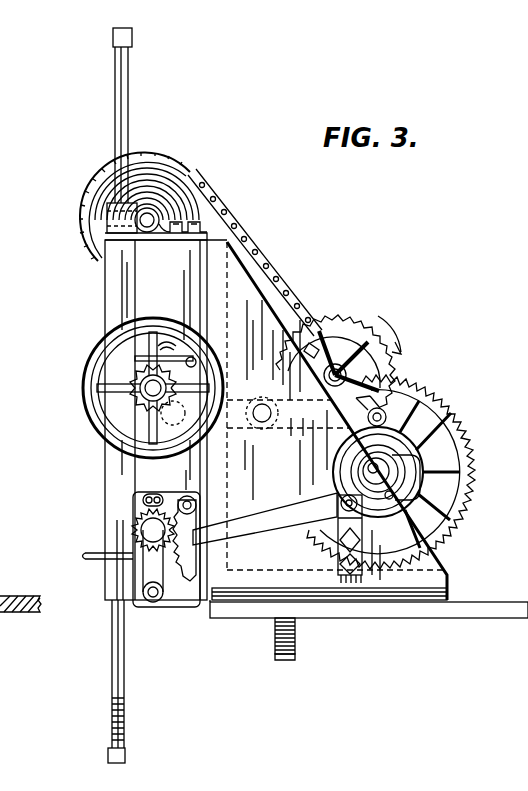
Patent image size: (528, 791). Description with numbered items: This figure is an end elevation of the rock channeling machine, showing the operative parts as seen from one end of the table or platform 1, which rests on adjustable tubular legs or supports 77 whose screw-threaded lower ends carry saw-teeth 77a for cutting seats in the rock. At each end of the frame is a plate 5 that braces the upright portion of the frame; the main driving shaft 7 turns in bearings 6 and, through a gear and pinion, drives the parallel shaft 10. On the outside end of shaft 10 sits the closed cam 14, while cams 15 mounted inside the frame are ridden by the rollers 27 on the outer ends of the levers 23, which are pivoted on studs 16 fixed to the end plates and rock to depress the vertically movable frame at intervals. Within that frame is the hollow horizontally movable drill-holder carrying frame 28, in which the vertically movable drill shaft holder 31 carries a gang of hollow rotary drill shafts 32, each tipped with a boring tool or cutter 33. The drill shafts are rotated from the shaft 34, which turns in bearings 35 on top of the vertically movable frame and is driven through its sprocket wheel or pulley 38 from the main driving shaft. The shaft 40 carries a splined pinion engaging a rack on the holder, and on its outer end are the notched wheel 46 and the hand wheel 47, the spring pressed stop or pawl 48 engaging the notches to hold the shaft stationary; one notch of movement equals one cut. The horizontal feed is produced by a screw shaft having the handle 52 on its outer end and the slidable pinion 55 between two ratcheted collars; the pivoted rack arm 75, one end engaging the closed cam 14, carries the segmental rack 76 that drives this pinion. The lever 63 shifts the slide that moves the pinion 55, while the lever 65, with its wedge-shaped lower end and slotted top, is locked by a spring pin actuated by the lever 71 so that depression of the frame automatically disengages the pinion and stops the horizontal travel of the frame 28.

The table or platform 1 is at (462, 612).
The end plate 5 is at (243, 300).
The bearing 6 is at (330, 360).
The main driving shaft 7 is at (324, 378).
The shaft 10 is at (386, 470).
The closed cam 14 is at (415, 482).
The cam 15 is at (437, 430).
The stud 16 is at (262, 423).
The lever 23 is at (294, 432).
The roller 27 is at (383, 413).
The horizontally movable drill-holder carrying frame 28 is at (105, 480).
The drill shaft holder 31 is at (132, 42).
The drill shaft 32 is at (110, 745).
The boring tool or cutter 33 is at (125, 756).
The shaft 34 is at (152, 216).
The bearing 35 is at (107, 231).
The sprocket wheel or pulley 38 is at (200, 215).
The shaft 40 is at (148, 386).
The notched wheel 46 is at (138, 403).
The hand wheel 47 is at (85, 412).
The spring pressed stop or pawl 48 is at (130, 358).
The handle 52 is at (147, 578).
The pinion 55 is at (132, 530).
The lever 63 is at (85, 558).
The lever 65 is at (135, 503).
The lever 71 is at (157, 496).
The pivoted rack arm 75 is at (265, 545).
The segmental rack 76 is at (188, 582).
The tubular leg or support 77 is at (296, 631).
The saw-teeth 77a is at (283, 661).